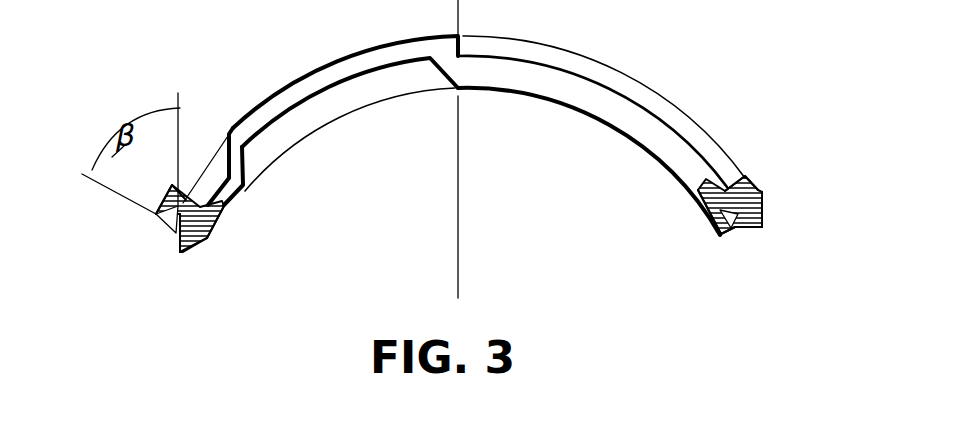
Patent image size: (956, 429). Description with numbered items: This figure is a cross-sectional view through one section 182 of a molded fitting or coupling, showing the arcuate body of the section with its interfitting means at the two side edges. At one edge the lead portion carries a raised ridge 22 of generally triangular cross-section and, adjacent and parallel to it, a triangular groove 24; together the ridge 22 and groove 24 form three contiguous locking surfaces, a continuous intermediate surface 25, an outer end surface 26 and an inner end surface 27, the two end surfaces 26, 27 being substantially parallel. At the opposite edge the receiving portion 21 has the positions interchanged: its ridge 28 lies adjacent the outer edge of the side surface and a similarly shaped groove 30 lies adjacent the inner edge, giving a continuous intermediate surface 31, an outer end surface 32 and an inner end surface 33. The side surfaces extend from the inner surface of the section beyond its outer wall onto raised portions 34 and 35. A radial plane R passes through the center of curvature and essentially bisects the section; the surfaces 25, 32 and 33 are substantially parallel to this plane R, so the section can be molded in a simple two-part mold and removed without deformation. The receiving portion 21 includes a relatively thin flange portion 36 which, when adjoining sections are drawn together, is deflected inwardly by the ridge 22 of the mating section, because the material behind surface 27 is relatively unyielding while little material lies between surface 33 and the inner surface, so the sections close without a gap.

The arcuate strip 182 is at (415, 97).
The receiving portion 21 is at (222, 206).
The raised ridge 22 is at (183, 253).
The groove 24 is at (170, 216).
The continuous intermediate surface 25 is at (181, 244).
The outer end surface 26 is at (160, 217).
The inner end surface 27 is at (203, 242).
The raised ridge 28 is at (765, 214).
The groove 30 is at (728, 237).
The continuous intermediate surface 31 is at (740, 232).
The outer end surface 32 is at (762, 208).
The inner end surface 33 is at (728, 232).
The raised portion 34 is at (196, 202).
The raised portion 35 is at (745, 178).
The flange portion 36 is at (720, 233).
The radial plane R is at (462, 196).